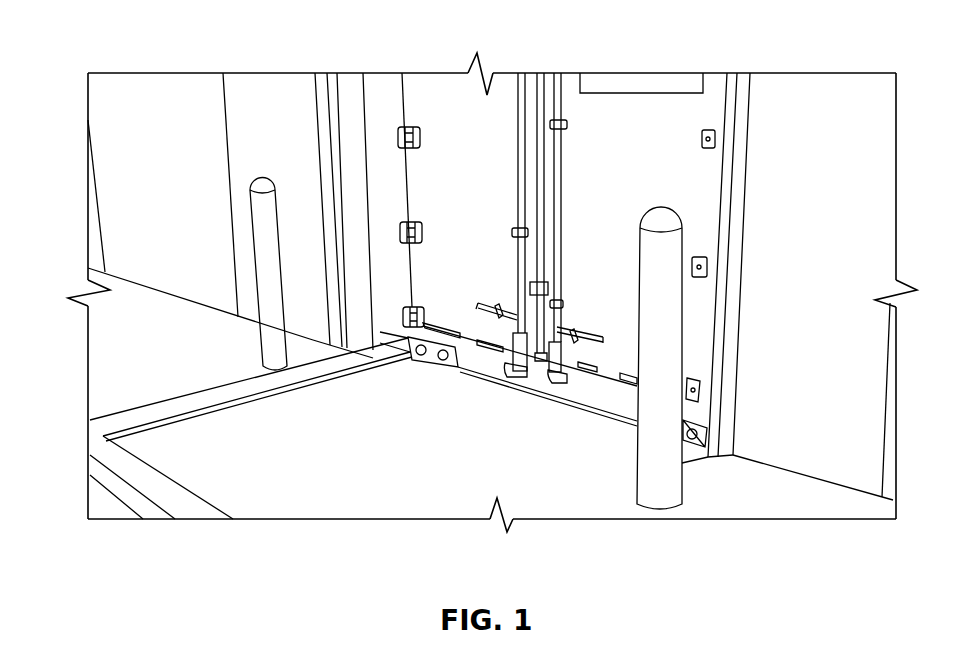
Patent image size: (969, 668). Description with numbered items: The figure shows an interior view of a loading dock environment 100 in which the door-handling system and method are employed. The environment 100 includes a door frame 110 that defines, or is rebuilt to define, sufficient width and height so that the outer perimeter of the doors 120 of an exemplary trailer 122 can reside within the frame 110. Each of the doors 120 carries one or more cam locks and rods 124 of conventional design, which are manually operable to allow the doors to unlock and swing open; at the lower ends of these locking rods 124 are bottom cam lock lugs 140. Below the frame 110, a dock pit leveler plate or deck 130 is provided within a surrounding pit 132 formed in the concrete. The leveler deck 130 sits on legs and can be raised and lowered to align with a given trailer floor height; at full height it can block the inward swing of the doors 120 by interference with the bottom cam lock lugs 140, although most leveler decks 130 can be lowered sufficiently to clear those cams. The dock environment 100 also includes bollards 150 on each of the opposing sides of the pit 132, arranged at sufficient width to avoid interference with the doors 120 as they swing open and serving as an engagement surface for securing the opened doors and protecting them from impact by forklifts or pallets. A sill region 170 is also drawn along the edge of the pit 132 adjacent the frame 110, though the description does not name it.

The loading dock environment 100 is at (430, 86).
The door frame 110 is at (346, 114).
The doors 120 is at (467, 160).
The trailer 122 is at (648, 86).
The cam locks and rods 124 is at (524, 160).
The dock pit leveler plate or deck 130 is at (196, 464).
The pit 132 is at (152, 417).
The bottom cam lock lugs 140 is at (545, 379).
The bollards 150 is at (263, 220).
The sill 170 is at (217, 386).